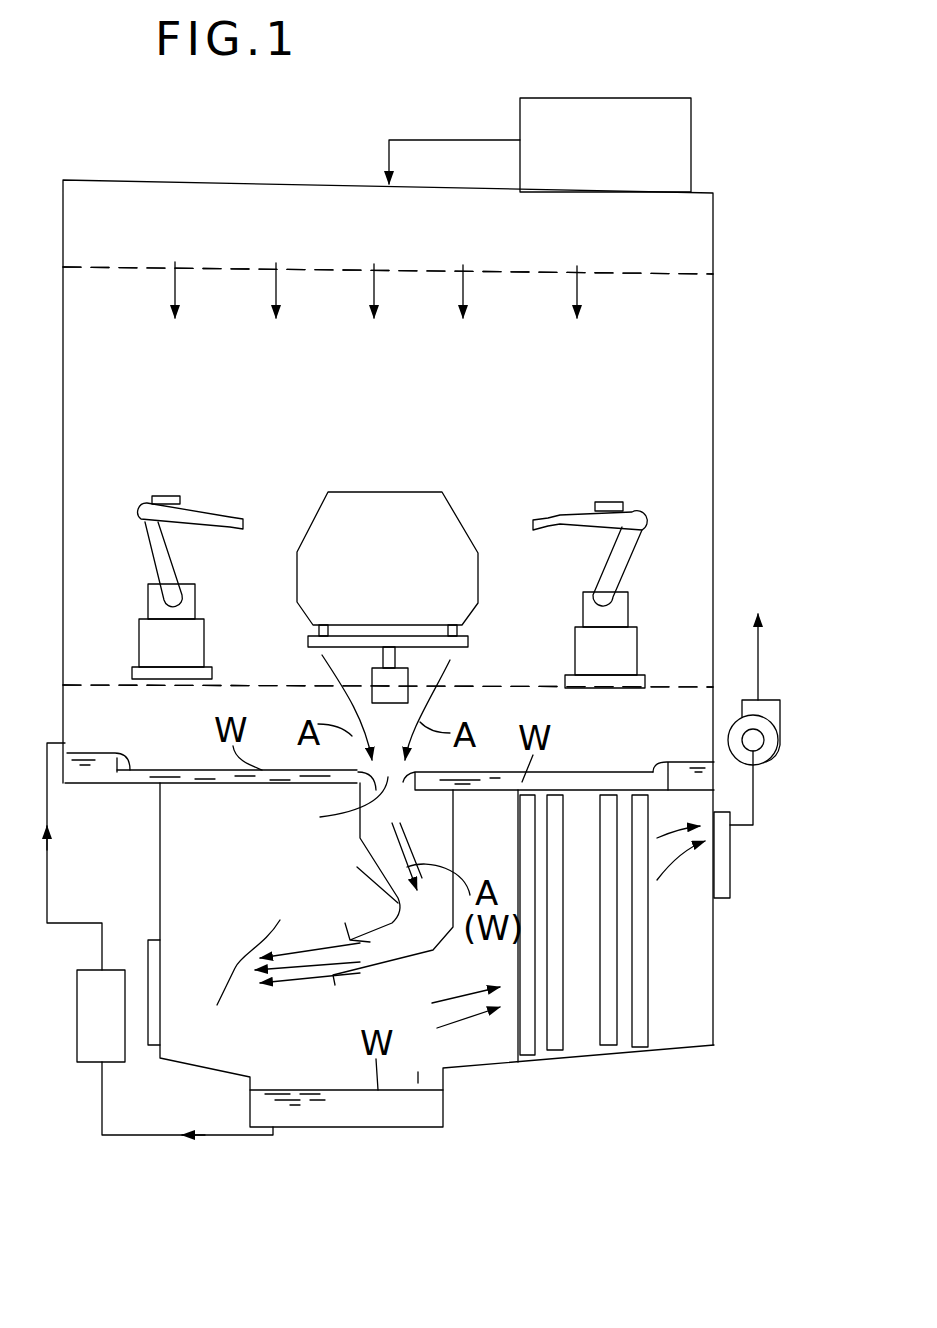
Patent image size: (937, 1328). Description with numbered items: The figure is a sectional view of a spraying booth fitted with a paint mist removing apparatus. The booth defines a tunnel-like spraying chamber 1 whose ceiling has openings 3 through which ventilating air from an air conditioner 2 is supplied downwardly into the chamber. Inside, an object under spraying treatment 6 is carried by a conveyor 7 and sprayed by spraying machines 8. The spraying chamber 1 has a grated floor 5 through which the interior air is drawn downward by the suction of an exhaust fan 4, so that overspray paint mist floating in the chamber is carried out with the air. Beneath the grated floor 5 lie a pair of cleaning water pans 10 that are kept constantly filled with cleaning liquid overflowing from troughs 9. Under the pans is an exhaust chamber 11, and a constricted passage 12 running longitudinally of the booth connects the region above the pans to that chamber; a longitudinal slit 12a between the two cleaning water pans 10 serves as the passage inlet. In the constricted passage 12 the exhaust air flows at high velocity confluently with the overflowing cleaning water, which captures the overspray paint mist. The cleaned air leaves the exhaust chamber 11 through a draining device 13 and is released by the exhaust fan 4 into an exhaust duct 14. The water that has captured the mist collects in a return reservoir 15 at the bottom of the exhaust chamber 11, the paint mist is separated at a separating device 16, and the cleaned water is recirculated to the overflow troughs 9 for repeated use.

The spraying chamber 1 is at (388, 612).
The air conditioner 2 is at (530, 122).
The openings 3 is at (132, 268).
The exhaust fan 4 is at (768, 753).
The grated floor 5 is at (254, 684).
The object under spraying treatment 6 is at (449, 527).
The conveyor 7 is at (398, 684).
The spraying machines 8 is at (192, 512).
The overflow troughs 9 is at (113, 775).
The cleaning water pans 10 is at (193, 783).
The exhaust chamber 11 is at (431, 891).
The constricted passage 12 is at (370, 850).
The slit 12a is at (358, 800).
The draining device 13 is at (608, 1032).
The exhaust duct 14 is at (758, 648).
The return reservoir 15 is at (250, 1105).
The separating device 16 is at (112, 980).